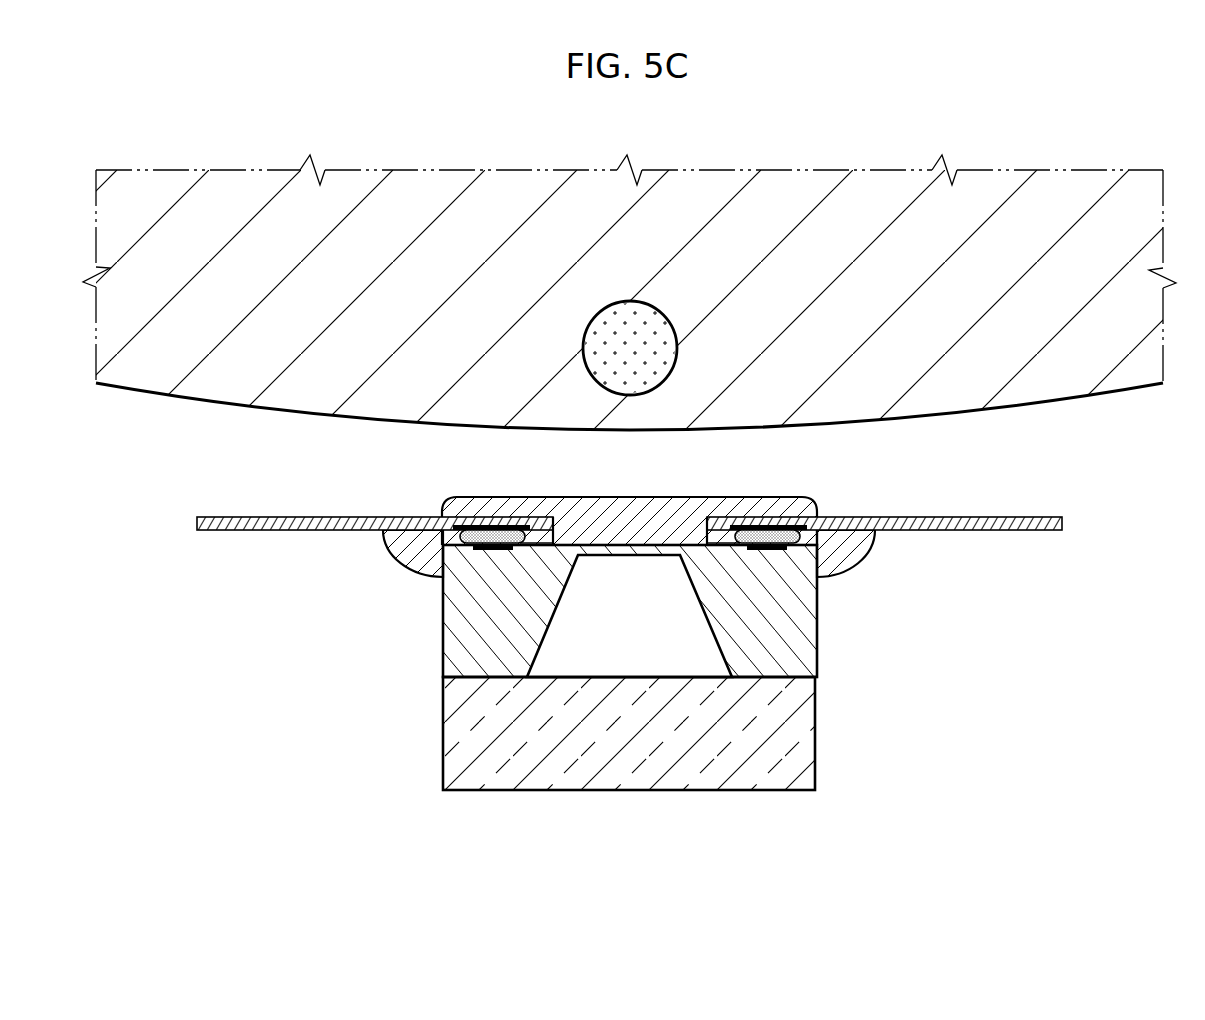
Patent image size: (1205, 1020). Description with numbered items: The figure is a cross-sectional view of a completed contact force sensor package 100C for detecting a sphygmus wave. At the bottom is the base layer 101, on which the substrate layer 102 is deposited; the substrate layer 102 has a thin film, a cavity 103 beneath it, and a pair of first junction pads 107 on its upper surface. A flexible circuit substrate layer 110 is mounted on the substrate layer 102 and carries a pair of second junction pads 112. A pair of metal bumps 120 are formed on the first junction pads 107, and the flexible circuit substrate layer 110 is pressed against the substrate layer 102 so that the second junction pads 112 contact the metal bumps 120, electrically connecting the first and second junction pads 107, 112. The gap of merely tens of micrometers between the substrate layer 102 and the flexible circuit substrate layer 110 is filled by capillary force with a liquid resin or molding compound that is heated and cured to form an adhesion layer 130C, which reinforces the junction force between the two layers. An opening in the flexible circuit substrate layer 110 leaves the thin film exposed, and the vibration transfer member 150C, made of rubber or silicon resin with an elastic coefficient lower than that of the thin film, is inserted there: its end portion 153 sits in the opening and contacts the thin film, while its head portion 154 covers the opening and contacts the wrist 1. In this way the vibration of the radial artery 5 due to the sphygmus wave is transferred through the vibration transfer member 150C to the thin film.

The wrist 1 is at (1106, 383).
The radial artery 5 is at (673, 332).
The contact force sensor package 100C is at (183, 479).
The base layer 101 is at (805, 737).
The substrate layer 102 is at (457, 664).
The cavity 103 is at (698, 660).
The first junction pads 107 is at (476, 550).
The flexible circuit substrate layer 110 is at (1058, 515).
The second junction pads 112 is at (470, 524).
The metal bumps 120 is at (458, 535).
The adhesion layer 130C is at (873, 540).
The vibration transfer member 150C is at (629, 499).
The end portion 153 is at (552, 546).
The head portion 154 is at (502, 500).